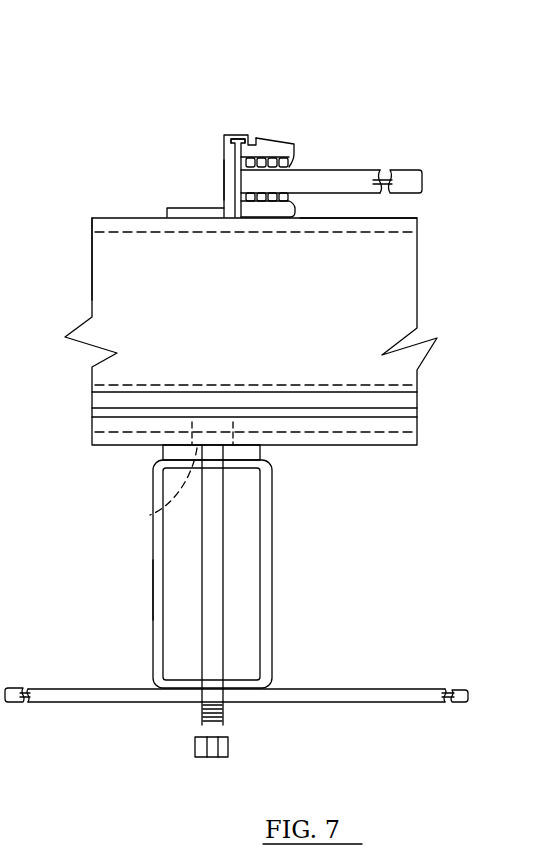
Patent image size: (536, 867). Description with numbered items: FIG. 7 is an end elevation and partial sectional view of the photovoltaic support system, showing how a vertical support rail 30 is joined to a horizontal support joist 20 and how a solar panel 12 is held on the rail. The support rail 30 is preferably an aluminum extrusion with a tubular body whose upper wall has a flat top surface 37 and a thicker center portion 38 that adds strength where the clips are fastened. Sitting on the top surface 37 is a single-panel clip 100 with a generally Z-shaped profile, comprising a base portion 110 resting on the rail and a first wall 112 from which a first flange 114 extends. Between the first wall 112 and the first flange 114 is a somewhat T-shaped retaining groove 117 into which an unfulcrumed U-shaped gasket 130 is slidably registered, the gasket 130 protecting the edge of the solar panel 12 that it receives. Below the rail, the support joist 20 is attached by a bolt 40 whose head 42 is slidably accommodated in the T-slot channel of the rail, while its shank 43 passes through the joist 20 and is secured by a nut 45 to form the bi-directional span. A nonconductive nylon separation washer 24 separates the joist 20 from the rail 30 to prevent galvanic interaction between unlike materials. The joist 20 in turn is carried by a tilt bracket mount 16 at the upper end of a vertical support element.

The single-panel clip 100 is at (200, 115).
The base portion 110 is at (224, 209).
The first wall 112 is at (224, 153).
The first flange 114 is at (258, 148).
The T-shaped retaining groove 117 is at (242, 137).
The U-shaped gasket 130 is at (297, 158).
The solar panel 12 is at (353, 170).
The flat top surface 37 is at (98, 216).
The thickest portion 38 is at (407, 227).
The support rail 30 is at (270, 304).
The separation washer 24 is at (260, 450).
The support joist 20 is at (272, 622).
The bolt 40 is at (177, 593).
The bolt head 42 is at (152, 515).
The bolt shank 43 is at (213, 527).
The tilt bracket mount 16 is at (360, 703).
The nut 45 is at (195, 745).